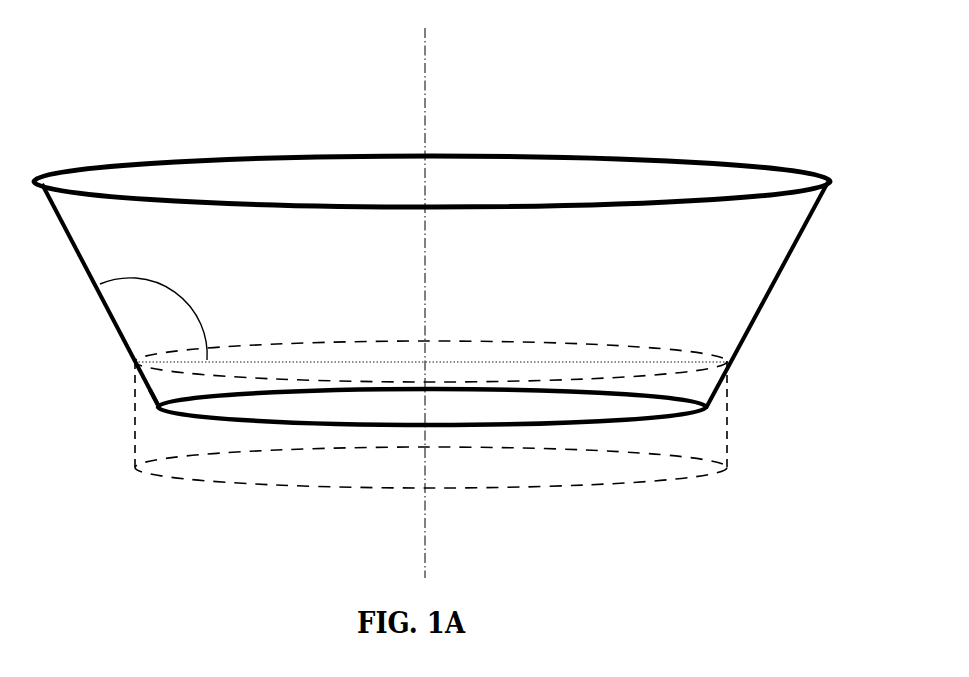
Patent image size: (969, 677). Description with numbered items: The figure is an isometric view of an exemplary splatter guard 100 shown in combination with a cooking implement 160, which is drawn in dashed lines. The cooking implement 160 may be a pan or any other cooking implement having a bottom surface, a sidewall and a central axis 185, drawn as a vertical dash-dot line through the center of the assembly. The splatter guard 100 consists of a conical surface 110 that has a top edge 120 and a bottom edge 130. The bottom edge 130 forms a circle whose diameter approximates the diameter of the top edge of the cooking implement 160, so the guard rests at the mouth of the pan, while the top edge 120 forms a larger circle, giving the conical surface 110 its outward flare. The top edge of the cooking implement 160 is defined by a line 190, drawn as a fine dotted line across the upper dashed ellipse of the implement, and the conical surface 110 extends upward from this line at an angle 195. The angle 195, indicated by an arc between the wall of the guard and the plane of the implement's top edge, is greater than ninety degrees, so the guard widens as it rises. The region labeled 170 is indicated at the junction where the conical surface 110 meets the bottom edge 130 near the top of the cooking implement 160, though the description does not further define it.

The splatter guard 100 is at (441, 275).
The conical surface 110 is at (790, 258).
The top edge 120 is at (562, 153).
The bottom edge 130 is at (235, 420).
The cooking implement 160 is at (712, 517).
The junction of side wall and bottom 170 is at (119, 381).
The central axis 185 is at (426, 70).
The line 190 is at (282, 362).
The angle 195 is at (168, 297).